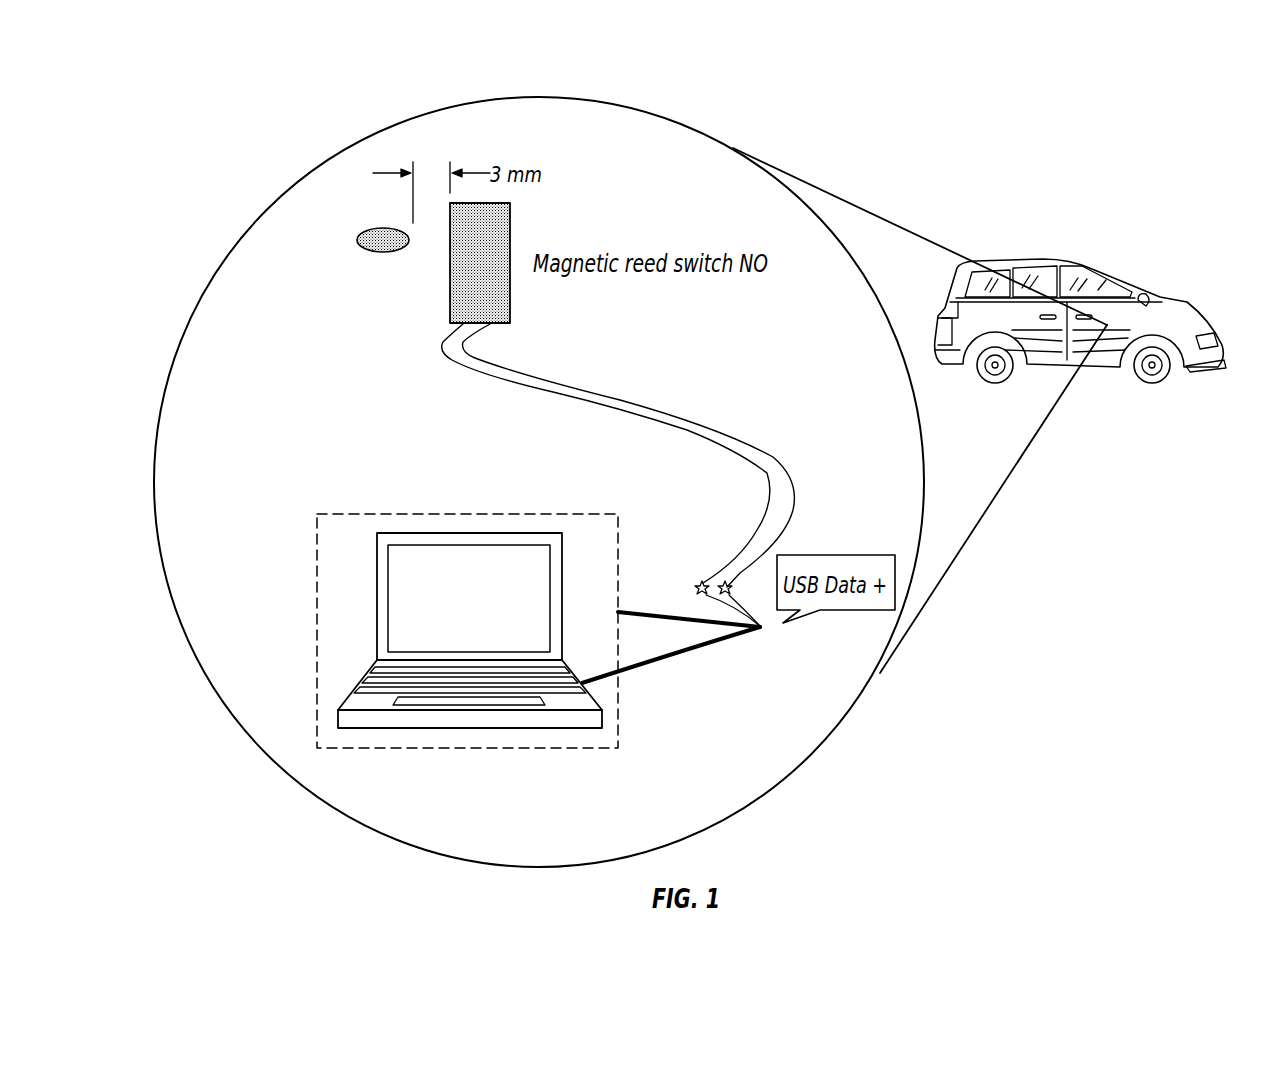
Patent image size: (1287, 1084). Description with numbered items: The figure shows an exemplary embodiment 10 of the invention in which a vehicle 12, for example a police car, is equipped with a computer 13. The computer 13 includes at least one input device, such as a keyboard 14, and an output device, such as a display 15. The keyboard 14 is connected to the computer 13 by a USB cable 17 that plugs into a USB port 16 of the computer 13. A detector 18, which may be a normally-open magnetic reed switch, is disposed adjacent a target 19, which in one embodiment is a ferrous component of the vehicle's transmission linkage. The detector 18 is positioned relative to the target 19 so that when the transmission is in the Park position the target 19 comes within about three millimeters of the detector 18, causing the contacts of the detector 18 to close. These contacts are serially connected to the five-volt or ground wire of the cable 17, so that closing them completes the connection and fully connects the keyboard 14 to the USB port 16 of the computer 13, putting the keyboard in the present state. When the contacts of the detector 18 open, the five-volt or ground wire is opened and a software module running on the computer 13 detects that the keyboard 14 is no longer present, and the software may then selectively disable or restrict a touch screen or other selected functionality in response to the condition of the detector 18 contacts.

The exemplary embodiment 10 is at (893, 182).
The vehicle 12 is at (1133, 278).
The computer 13 is at (376, 512).
The keyboard 14 is at (380, 703).
The display 15 is at (562, 560).
The USB port 16 is at (619, 606).
The USB cable 17 is at (675, 664).
The detector 18 is at (510, 298).
The target 19 is at (385, 258).